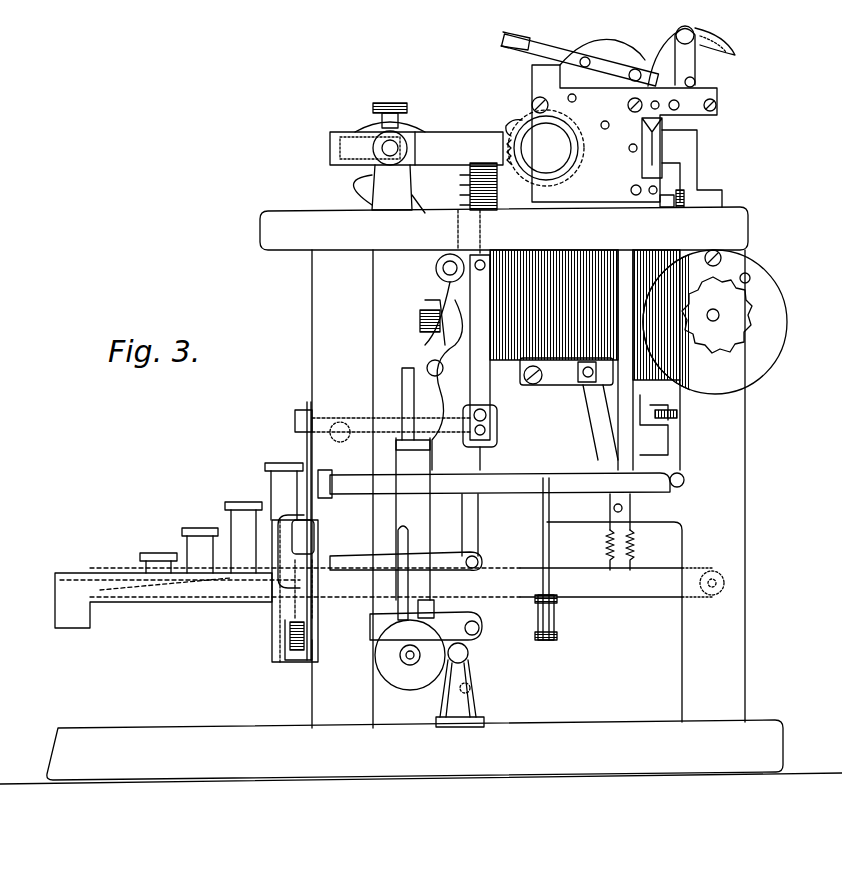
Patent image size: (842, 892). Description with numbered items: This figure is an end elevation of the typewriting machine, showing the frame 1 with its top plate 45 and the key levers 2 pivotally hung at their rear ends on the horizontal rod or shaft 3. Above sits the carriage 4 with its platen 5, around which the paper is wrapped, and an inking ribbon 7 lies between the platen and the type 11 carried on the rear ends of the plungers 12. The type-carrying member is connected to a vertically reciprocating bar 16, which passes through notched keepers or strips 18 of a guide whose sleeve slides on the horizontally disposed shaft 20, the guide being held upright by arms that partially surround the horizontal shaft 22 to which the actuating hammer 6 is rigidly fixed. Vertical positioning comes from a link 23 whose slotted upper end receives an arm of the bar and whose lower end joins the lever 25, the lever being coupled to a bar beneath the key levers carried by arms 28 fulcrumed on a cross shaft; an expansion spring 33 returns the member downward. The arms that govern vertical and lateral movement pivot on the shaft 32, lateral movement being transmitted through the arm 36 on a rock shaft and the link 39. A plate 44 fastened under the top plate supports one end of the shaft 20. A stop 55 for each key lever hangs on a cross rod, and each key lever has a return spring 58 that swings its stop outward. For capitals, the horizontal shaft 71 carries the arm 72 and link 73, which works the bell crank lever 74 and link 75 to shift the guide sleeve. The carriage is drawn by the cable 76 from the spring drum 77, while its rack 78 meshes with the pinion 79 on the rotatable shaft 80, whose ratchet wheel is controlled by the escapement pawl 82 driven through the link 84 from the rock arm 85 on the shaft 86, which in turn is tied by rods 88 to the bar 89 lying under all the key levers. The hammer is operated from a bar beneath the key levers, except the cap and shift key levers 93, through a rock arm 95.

The frame 1 is at (528, 489).
The key levers 2 is at (600, 585).
The rod or shaft 3 is at (712, 592).
The carriage 4 is at (627, 136).
The platen 5 is at (514, 130).
The actuating hammer 6 is at (345, 192).
The inking ribbon 7 is at (416, 148).
The type 11 is at (498, 195).
The plungers 12 is at (460, 200).
The vertically reciprocating bar 16 is at (488, 432).
The notched keepers or strips 18 is at (476, 222).
The horizontally disposed shaft 20 is at (430, 378).
The horizontal shaft 22 is at (436, 268).
The link 23 is at (480, 528).
The lever 25 is at (484, 550).
The arms 28 is at (483, 620).
The shaft 32 is at (418, 660).
The expansion spring 33 is at (295, 512).
The arm 36 is at (420, 338).
The link 39 is at (306, 444).
The plate 44 is at (554, 360).
The top plate 45 is at (504, 228).
The stops 55 is at (288, 642).
The return spring 58 is at (607, 552).
The horizontal shaft 71 is at (470, 653).
The arm 72 is at (423, 654).
The link 73 is at (404, 540).
The bell crank lever 74 is at (405, 400).
The link 75 is at (410, 378).
The cable 76 is at (636, 262).
The spring drum 77 is at (789, 300).
The rack 78 is at (668, 207).
The pinion 79 is at (681, 205).
The rotatable shaft 80 is at (670, 418).
The escapement pawl 82 is at (567, 386).
The link 84 is at (460, 185).
The rock arm 85 is at (494, 484).
The rock shaft 86 is at (685, 482).
The rods 88 is at (552, 525).
The bar 89 is at (556, 622).
The shift key levers 93 is at (82, 577).
The rock arm 95 is at (388, 432).